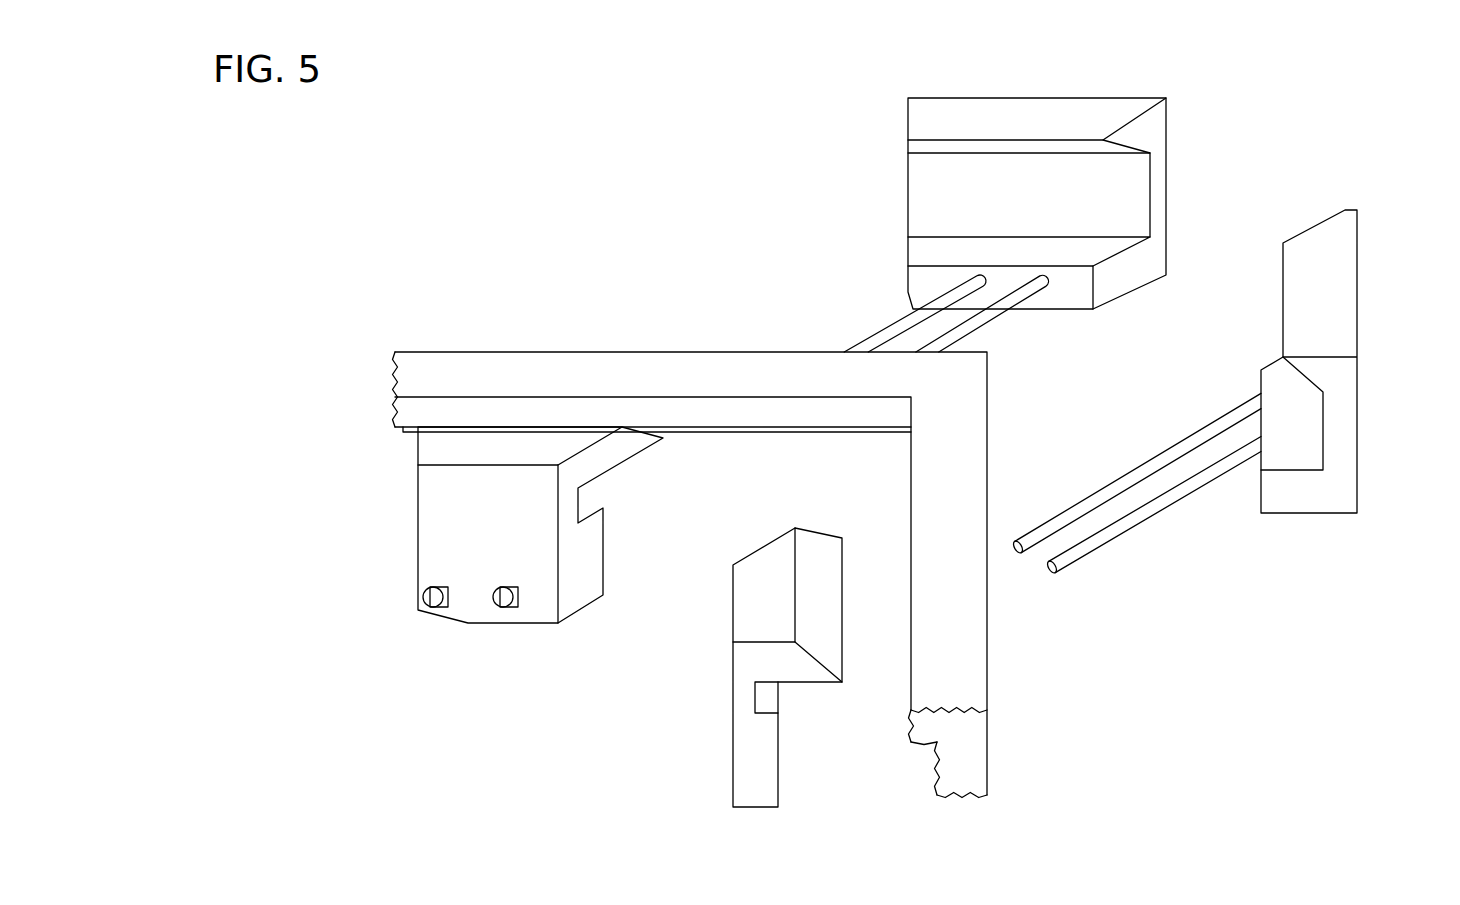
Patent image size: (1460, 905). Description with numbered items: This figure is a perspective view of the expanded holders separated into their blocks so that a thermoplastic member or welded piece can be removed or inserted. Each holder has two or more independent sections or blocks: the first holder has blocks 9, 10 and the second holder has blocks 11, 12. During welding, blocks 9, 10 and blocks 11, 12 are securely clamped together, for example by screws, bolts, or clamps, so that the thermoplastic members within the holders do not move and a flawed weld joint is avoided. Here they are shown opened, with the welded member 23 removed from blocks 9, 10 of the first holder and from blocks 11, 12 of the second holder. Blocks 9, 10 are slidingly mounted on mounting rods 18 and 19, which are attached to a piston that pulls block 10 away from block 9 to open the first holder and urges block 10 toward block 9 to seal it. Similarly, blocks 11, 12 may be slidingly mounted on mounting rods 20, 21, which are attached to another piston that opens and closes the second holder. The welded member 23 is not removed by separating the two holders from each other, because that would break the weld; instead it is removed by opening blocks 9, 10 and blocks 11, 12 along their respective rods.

The block 9 is at (1338, 288).
The block 10 is at (755, 595).
The block 11 is at (1093, 110).
The block 12 is at (438, 531).
The mounting rod 18 is at (1160, 453).
The mounting rod 19 is at (1178, 500).
The mounting rod 20 is at (990, 321).
The mounting rod 21 is at (887, 327).
The welded member 23 is at (965, 662).